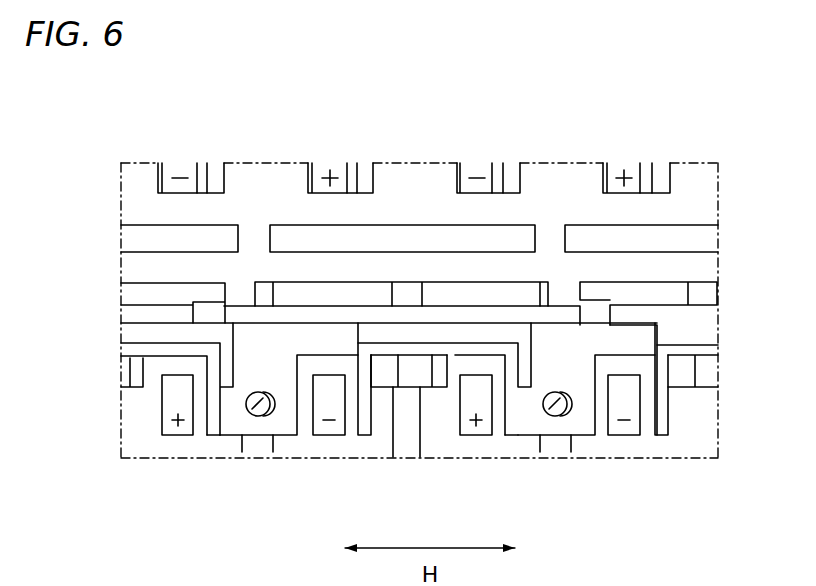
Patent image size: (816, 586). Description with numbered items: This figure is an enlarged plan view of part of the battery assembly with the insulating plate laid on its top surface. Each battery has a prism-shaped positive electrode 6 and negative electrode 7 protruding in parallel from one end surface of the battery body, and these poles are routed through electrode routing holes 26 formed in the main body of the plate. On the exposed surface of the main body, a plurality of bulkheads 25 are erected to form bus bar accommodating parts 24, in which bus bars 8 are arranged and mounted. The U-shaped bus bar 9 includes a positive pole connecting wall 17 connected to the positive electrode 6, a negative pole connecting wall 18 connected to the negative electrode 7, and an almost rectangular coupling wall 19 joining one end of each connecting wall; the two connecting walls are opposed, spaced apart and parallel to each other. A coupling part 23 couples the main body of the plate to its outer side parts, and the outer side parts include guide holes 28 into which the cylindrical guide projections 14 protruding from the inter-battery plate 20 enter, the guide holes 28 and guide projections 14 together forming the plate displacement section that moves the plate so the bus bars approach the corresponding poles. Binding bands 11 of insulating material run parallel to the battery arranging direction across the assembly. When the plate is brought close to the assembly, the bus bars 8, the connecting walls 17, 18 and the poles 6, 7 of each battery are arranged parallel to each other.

The positive electrode 6 is at (320, 172).
The negative electrode 7 is at (170, 170).
The bus bar 8 is at (216, 172).
The bus bar 9 is at (157, 364).
The binding band 11 is at (413, 312).
The guide projection 14 is at (246, 412).
The positive pole connecting wall 17 is at (213, 437).
The negative pole connecting wall 18 is at (364, 433).
The coupling wall 19 is at (143, 390).
The inter-battery plate 20 is at (253, 448).
The coupling part 23 is at (210, 307).
The bus bar accommodating part 24 is at (237, 342).
The bulkhead 25 is at (225, 363).
The electrode routing hole 26 is at (202, 168).
The guide hole 28 is at (270, 416).